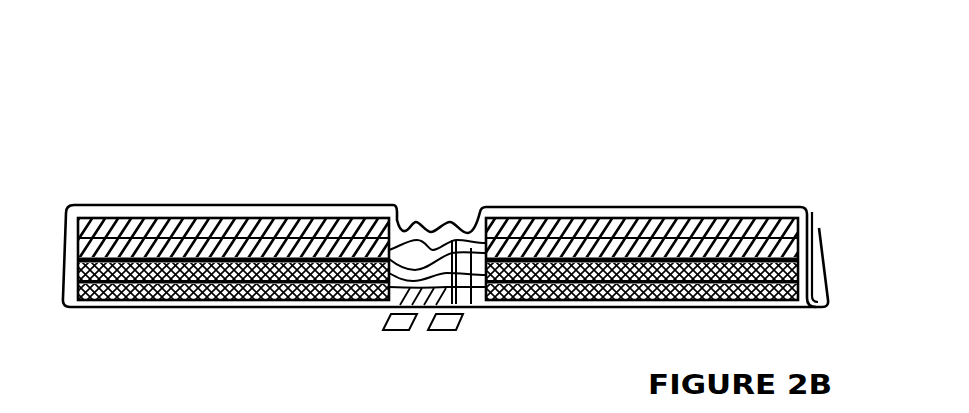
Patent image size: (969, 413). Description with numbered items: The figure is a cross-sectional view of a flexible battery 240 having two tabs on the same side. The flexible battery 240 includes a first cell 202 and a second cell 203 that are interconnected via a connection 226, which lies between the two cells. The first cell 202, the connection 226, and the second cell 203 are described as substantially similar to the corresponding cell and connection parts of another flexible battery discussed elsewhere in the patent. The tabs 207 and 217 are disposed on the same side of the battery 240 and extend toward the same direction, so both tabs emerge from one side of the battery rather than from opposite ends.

The flexible battery 240 is at (465, 64).
The first cell 202 is at (206, 178).
The second cell 203 is at (674, 178).
The connection 226 is at (453, 205).
The tab 217 is at (398, 324).
The tab 207 is at (445, 328).